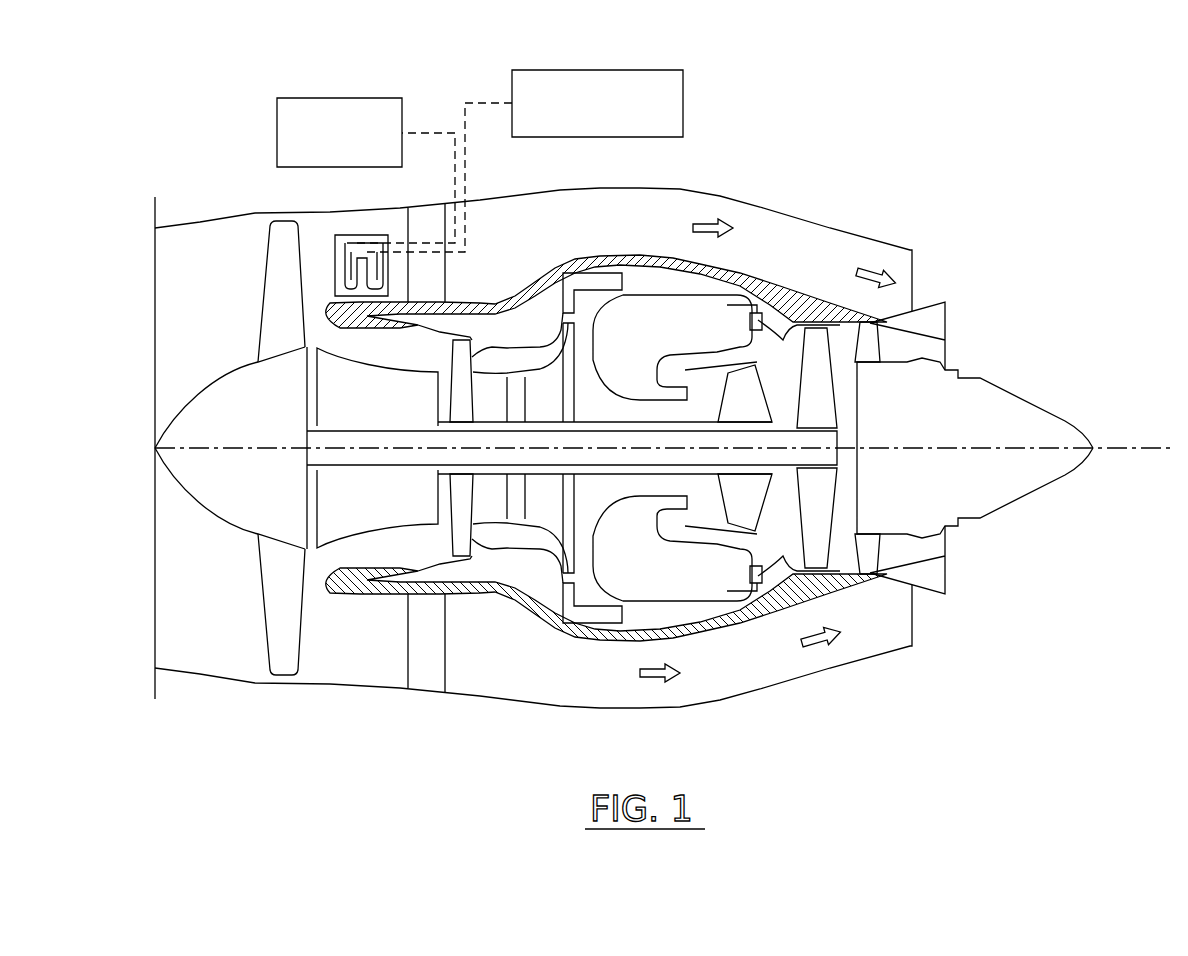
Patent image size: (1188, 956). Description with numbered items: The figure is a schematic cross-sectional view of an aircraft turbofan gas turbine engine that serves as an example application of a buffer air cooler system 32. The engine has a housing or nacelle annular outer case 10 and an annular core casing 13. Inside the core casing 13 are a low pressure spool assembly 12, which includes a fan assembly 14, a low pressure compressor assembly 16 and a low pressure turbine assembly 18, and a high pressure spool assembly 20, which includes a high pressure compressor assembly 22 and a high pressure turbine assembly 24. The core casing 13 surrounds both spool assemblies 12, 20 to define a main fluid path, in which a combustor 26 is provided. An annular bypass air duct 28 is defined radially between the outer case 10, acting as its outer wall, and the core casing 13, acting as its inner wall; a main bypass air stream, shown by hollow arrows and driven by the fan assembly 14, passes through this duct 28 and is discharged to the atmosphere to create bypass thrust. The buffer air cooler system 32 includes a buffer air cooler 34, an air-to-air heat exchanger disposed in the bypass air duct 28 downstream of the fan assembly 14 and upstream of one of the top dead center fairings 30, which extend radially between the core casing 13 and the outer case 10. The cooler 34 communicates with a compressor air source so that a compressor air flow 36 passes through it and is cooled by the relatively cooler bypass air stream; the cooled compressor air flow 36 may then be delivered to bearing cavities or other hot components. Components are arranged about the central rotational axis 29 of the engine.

The annular outer case 10 is at (568, 195).
The low pressure spool assembly 12 is at (388, 468).
The annular core casing 13 is at (618, 253).
The fan assembly 14 is at (263, 270).
The low pressure compressor assembly 16 is at (340, 513).
The low pressure turbine assembly 18 is at (840, 350).
The high pressure spool assembly 20 is at (512, 420).
The high pressure compressor assembly 22 is at (490, 347).
The high pressure turbine assembly 24 is at (783, 333).
The combustor 26 is at (678, 307).
The annular bypass air duct 28 is at (568, 243).
The central rotational axis 29 is at (1135, 449).
The top dead center fairing 30 is at (450, 633).
The buffer air cooler system 32 is at (357, 250).
The buffer air cooler 34 is at (363, 253).
The compressor air flow 36 is at (427, 132).